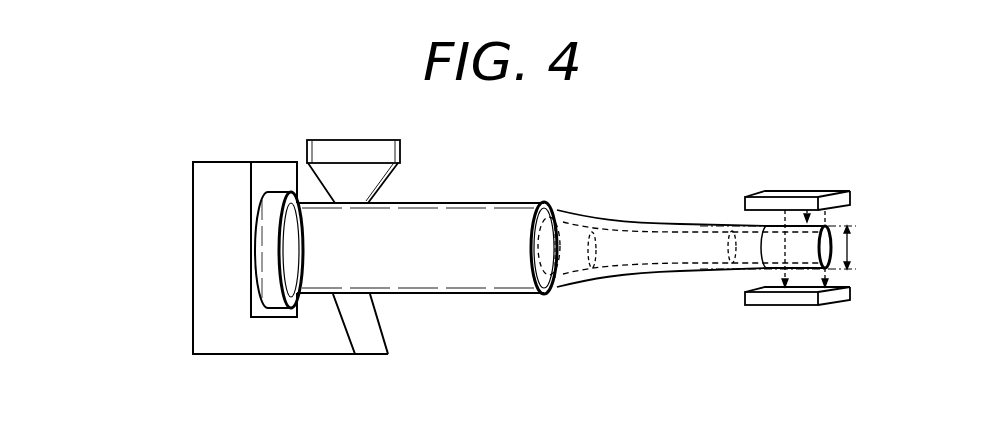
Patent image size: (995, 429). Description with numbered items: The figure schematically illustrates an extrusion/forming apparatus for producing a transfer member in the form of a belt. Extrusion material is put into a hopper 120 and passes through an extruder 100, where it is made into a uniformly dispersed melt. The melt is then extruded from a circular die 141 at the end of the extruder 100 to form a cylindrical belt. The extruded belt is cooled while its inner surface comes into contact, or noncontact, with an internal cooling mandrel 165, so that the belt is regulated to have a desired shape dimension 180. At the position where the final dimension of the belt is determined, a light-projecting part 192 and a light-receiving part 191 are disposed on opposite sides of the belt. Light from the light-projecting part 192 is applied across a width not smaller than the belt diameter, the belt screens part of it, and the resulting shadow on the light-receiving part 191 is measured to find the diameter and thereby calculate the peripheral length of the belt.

The extruder 100 is at (480, 270).
The hopper 120 is at (348, 151).
The circular die 141 is at (563, 283).
The internal cooling mandrel 165 is at (680, 238).
The shape dimension 180 is at (794, 247).
The light-receiving part 191 is at (773, 250).
The light-projecting part 192 is at (803, 202).